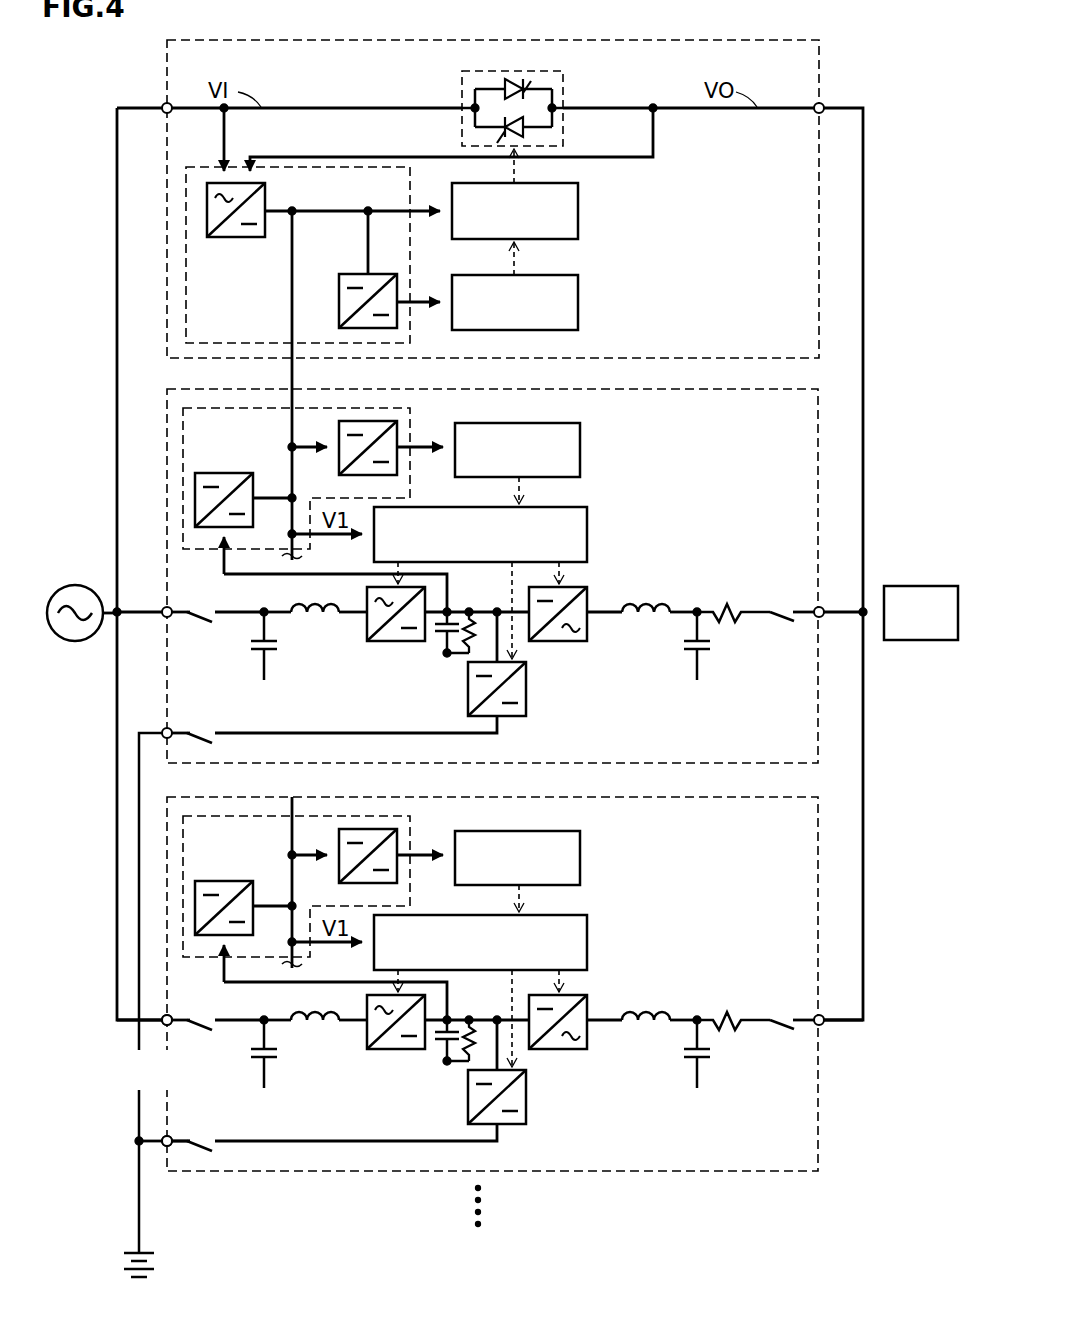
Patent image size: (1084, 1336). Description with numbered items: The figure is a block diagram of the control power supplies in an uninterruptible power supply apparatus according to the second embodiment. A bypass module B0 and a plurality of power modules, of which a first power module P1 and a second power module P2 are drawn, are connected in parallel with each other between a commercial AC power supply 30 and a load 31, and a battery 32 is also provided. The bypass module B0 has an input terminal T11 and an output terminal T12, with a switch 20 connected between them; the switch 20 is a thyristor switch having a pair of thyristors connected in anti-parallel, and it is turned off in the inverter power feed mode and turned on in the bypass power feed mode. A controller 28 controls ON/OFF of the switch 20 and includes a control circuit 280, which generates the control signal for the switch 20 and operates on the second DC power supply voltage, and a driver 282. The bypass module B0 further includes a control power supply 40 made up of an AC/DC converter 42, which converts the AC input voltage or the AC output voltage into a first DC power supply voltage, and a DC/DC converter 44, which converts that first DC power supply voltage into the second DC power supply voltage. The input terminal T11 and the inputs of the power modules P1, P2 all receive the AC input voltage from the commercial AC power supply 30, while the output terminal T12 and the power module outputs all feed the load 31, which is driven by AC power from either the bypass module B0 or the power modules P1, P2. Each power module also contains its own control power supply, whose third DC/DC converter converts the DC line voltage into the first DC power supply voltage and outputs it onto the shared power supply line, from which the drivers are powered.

The switch 20 is at (545, 72).
The controller 28 is at (606, 182).
The commercial AC power supply 30 is at (73, 586).
The load 31 is at (921, 586).
The battery 32 is at (147, 1253).
The control power supply 40 is at (389, 223).
The AC/DC converter 42 is at (246, 238).
The DC/DC converter 44 is at (345, 274).
The control circuit 280 is at (535, 277).
The driver 282 is at (535, 185).
The bypass module B0 is at (762, 42).
The power module P1 is at (763, 392).
The power module P2 is at (763, 800).
The input terminal T11 is at (163, 115).
The output terminal T12 is at (826, 106).